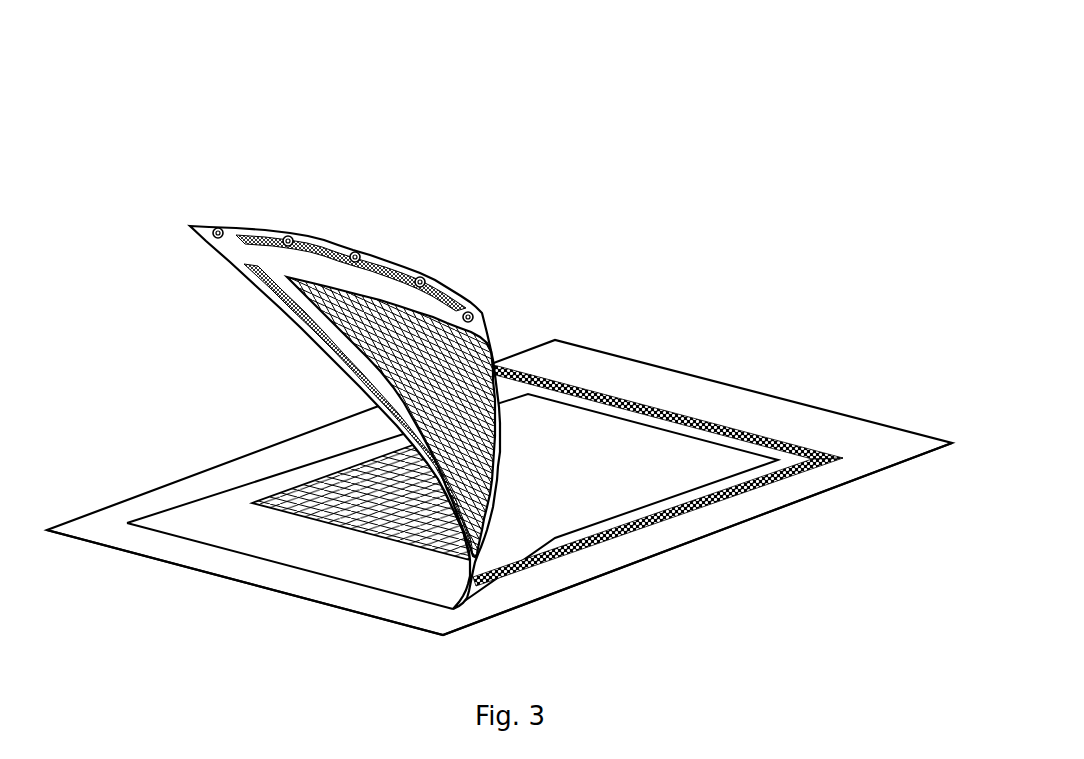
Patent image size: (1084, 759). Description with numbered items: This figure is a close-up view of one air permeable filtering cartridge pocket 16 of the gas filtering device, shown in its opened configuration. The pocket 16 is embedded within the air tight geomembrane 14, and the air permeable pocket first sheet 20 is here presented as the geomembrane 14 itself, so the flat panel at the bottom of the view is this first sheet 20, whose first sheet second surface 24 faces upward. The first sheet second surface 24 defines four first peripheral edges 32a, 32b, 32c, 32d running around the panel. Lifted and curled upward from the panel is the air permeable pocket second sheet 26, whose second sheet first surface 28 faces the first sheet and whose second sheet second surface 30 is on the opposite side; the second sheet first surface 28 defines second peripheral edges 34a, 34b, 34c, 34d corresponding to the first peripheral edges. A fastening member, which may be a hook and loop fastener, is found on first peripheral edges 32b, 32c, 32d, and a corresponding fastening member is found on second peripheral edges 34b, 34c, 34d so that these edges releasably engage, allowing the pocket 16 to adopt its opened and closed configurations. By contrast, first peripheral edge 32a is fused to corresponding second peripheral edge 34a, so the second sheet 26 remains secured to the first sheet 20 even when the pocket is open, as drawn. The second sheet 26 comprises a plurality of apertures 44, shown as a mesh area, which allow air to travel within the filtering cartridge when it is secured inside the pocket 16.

The air tight geomembrane 14 is at (478, 595).
The air permeable pocket first sheet 20 is at (245, 582).
The air permeable filtering cartridge pocket 16 is at (589, 262).
The first sheet second surface 24 is at (735, 412).
The air permeable pocket second sheet 26 is at (205, 528).
The second sheet first surface 28 is at (443, 299).
The second sheet second surface 30 is at (273, 547).
The first peripheral edge 32a is at (418, 607).
The first peripheral edge 32b is at (632, 533).
The first peripheral edge 32c is at (615, 392).
The first peripheral edge 32d is at (504, 382).
The second peripheral edge 34a is at (345, 598).
The second peripheral edge 34b is at (372, 383).
The second peripheral edge 34c is at (385, 275).
The second peripheral edge 34d is at (215, 483).
The apertures 44 is at (372, 330).